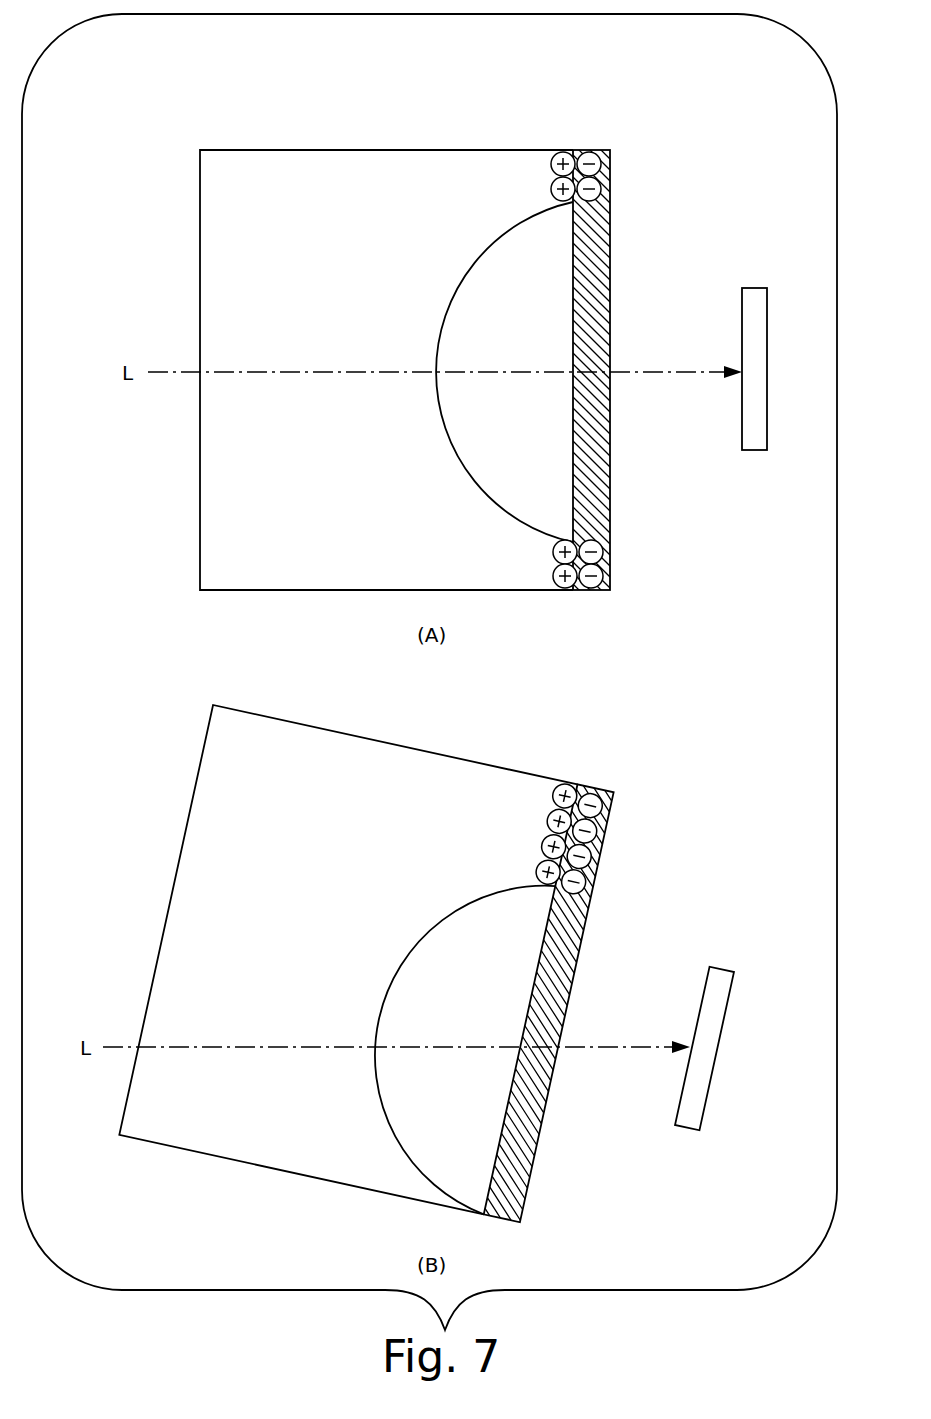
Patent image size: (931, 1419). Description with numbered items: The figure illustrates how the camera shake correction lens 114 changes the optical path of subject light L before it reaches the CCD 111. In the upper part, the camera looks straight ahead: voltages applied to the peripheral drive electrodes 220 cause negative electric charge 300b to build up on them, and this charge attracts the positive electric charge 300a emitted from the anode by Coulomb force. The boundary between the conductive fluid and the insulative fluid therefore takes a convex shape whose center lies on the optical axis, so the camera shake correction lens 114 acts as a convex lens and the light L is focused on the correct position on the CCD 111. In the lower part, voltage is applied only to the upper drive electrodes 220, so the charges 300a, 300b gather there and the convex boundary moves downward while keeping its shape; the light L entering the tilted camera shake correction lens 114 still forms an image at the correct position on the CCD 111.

The camera shake correction lens 114 is at (570, 93).
The drive electrodes 220 is at (610, 228).
The positive electric charge 300a is at (550, 165).
The negative electric charge 300b is at (602, 160).
The CCD 111 is at (754, 302).